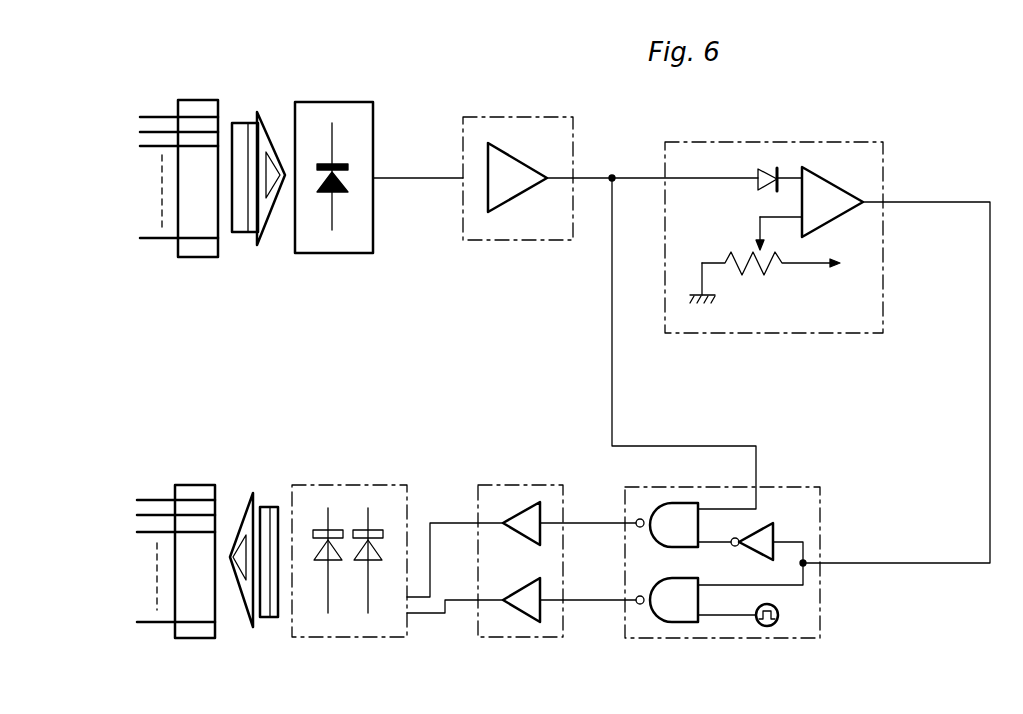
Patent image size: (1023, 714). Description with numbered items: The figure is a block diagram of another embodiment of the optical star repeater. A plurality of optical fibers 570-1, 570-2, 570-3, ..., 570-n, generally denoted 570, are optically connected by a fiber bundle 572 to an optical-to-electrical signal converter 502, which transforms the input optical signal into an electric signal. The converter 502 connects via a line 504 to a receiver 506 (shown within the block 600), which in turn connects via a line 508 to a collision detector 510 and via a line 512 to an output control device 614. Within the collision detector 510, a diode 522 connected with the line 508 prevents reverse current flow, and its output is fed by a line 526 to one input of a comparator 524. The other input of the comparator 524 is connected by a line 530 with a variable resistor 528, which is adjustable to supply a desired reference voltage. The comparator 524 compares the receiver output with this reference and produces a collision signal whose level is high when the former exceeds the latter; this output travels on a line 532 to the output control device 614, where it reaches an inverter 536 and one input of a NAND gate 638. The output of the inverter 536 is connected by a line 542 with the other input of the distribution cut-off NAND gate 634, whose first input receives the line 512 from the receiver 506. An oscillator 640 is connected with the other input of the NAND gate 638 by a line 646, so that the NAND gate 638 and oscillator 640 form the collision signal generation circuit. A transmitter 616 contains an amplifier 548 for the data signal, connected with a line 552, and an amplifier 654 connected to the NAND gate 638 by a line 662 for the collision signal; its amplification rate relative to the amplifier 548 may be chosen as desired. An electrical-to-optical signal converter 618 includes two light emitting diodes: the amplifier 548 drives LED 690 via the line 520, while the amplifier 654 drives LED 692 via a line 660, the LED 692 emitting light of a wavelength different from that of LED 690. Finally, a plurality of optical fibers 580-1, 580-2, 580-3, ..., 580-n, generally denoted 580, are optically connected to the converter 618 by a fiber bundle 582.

The optical fibers 570 is at (157, 143).
The fiber bundle 572 is at (216, 100).
The optical fiber 570-1 is at (142, 117).
The optical fiber 570-2 is at (142, 132).
The optical fiber 570-3 is at (144, 146).
The optical fiber 570-n is at (142, 238).
The optical-to-electrical signal converter 502 is at (335, 102).
The line 504 is at (417, 178).
The amplifier circuit 600 is at (512, 147).
The receiver 506 is at (565, 117).
The line 508 is at (633, 178).
The collision detector device 510 is at (774, 247).
The diode 522 is at (756, 172).
The comparator 524 is at (842, 186).
The line 526 is at (787, 172).
The variable resistor 528 is at (766, 280).
The line 530 is at (758, 217).
The line 512 is at (612, 385).
The line 532 is at (988, 365).
The optical fibers 580 is at (154, 523).
The fiber bundle 582 is at (215, 485).
The optical fiber 580-1 is at (140, 500).
The optical fiber 580-2 is at (139, 515).
The optical fiber 580-3 is at (142, 532).
The optical fiber 580-n is at (140, 622).
The electrical-to-optical signal converter 618 is at (332, 556).
The LED 690 is at (368, 563).
The LED 692 is at (323, 563).
The line 520 is at (441, 522).
The line 660 is at (430, 614).
The transmitter 616 is at (548, 553).
The amplifier 548 is at (541, 510).
The amplifier 654 is at (518, 610).
The line 552 is at (591, 525).
The line 662 is at (591, 603).
The output control device 614 is at (752, 565).
The NAND gate 634 is at (683, 503).
The NAND gate 638 is at (666, 625).
The inverter 536 is at (776, 527).
The line 542 is at (712, 544).
The line 646 is at (728, 617).
The oscillator 640 is at (775, 625).